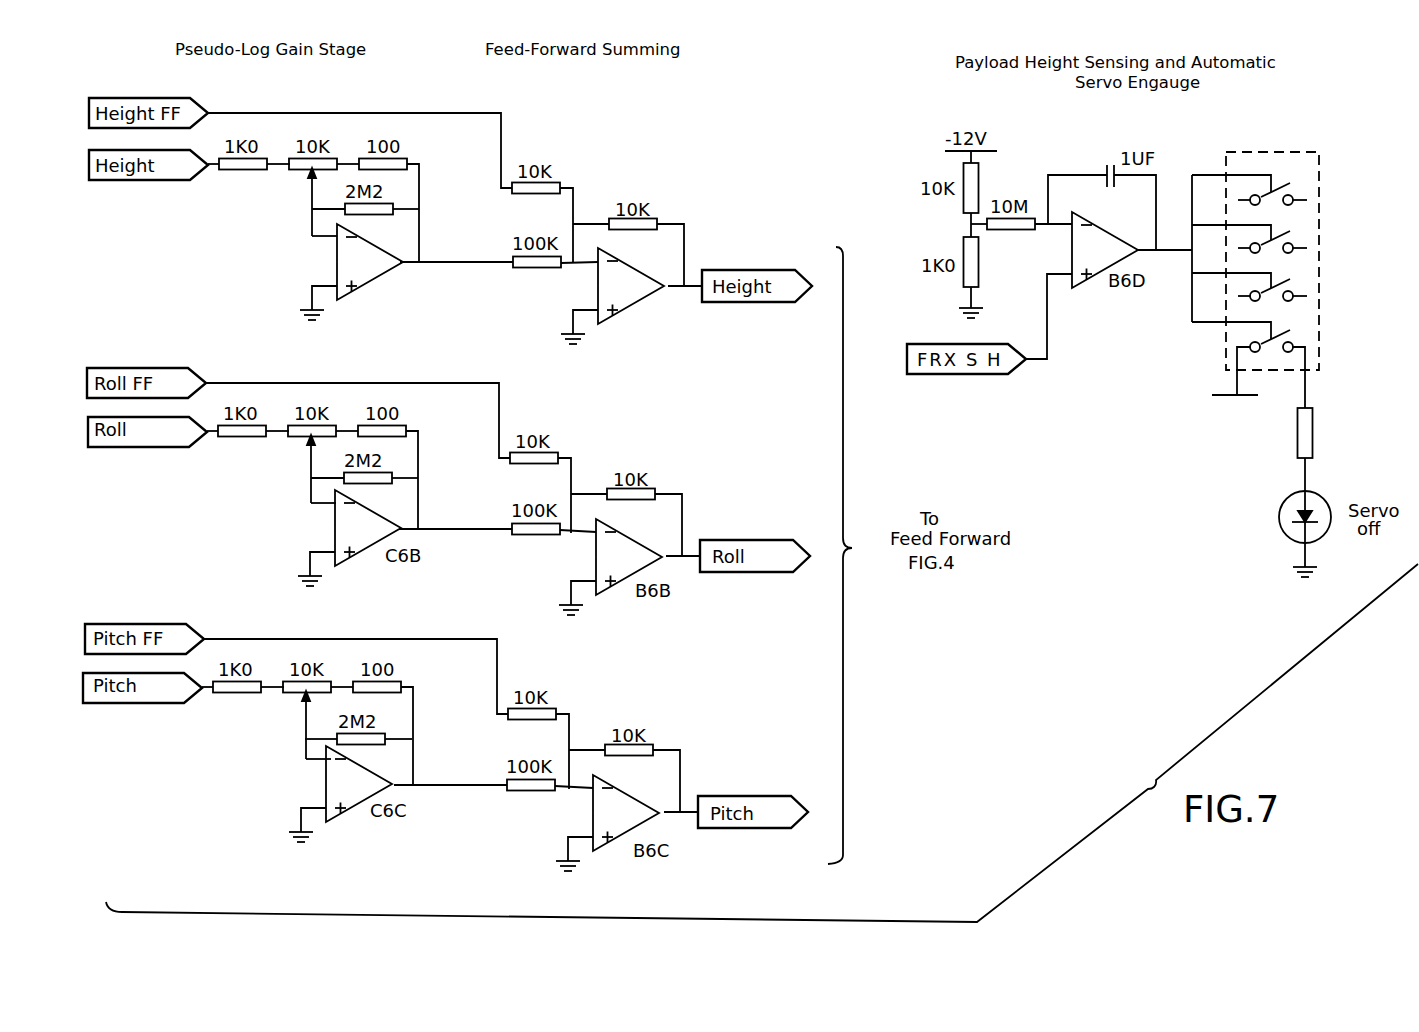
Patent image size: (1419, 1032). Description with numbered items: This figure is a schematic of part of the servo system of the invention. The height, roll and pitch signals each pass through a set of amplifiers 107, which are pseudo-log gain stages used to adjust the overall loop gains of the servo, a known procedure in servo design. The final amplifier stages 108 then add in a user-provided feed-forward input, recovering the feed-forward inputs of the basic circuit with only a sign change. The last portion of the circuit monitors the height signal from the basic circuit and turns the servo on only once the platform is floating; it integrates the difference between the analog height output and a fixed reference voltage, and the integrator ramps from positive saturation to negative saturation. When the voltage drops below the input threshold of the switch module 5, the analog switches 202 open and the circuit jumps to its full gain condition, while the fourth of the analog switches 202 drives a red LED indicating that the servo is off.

The pseudo-log gain stage amplifiers 107 is at (366, 274).
The final amplifier stages 108 is at (636, 290).
The switch module A5 5 is at (1272, 246).
The DG202 analog switches 202 is at (1297, 296).